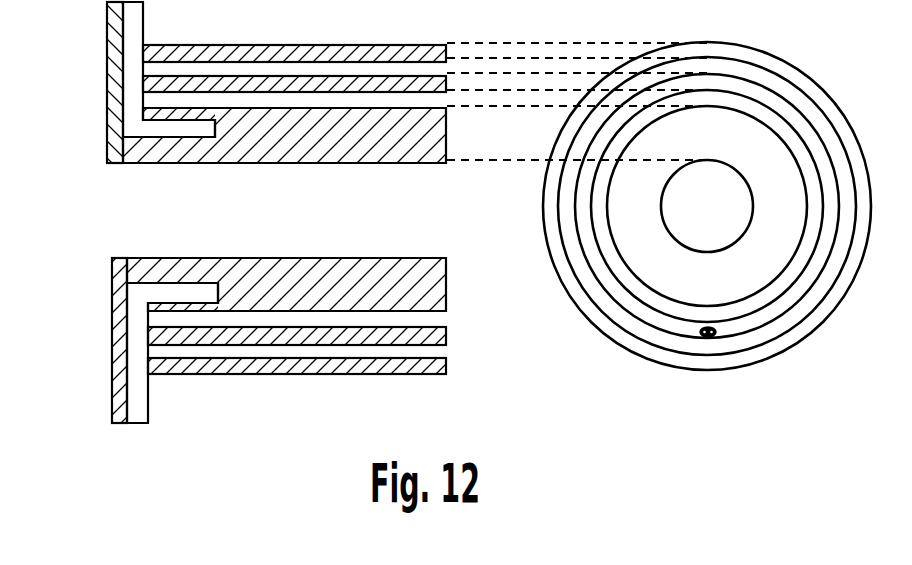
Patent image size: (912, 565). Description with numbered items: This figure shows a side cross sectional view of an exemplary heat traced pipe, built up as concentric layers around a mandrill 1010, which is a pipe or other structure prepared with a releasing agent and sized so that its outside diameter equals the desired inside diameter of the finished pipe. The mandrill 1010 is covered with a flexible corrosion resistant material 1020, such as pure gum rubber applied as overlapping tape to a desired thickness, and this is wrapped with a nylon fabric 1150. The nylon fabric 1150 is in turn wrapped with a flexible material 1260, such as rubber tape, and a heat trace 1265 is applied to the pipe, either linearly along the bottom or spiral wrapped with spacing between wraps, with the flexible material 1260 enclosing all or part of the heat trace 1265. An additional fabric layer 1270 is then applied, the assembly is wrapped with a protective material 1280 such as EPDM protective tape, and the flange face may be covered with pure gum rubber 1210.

The pure gum rubber 1210 is at (108, 73).
The mandrill 1010 is at (446, 207).
The flexible corrosion resistant material 1020 is at (446, 256).
The nylon fabric 1150 is at (447, 319).
The flexible material 1260 is at (447, 336).
The additional fabric layer 1270 is at (447, 365).
The protective material 1280 is at (302, 376).
The heat trace 1265 is at (716, 331).